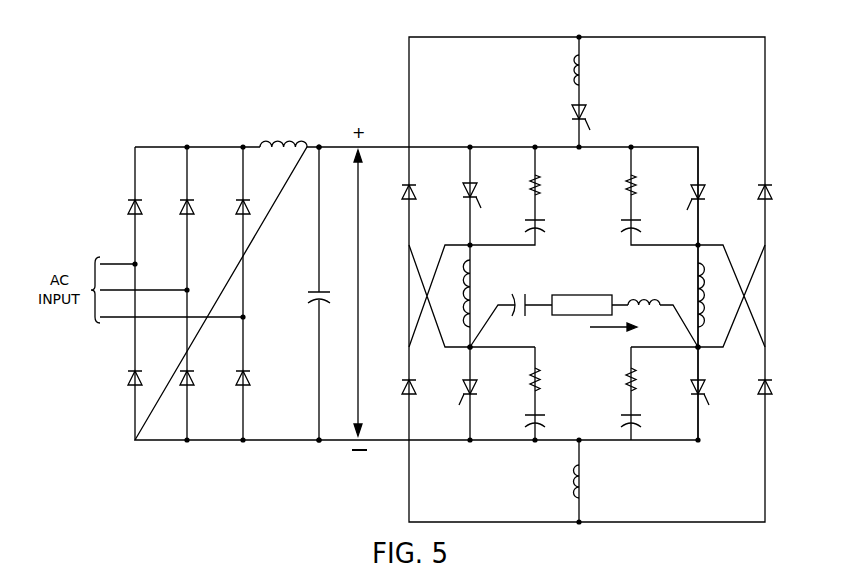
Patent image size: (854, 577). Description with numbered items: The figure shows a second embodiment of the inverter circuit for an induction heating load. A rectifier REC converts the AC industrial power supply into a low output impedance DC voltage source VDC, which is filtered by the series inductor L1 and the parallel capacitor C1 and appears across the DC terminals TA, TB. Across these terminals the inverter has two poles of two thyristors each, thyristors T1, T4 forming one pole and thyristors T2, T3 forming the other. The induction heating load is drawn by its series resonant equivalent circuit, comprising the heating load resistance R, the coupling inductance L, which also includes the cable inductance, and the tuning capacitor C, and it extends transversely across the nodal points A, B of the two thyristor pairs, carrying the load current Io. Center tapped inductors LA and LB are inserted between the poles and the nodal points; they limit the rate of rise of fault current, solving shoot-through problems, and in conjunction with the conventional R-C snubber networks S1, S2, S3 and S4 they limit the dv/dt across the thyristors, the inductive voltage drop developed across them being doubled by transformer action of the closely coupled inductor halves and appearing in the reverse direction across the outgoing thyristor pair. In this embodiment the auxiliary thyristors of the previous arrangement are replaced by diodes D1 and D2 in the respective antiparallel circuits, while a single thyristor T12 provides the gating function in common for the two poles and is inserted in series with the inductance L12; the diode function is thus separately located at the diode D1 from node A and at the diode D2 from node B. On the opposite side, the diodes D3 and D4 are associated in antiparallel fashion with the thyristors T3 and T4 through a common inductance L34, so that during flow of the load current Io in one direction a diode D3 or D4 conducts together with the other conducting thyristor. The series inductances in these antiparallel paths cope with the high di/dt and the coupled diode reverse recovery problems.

The rectifier REC is at (231, 253).
The series inductor L1 is at (283, 158).
The DC terminal TA is at (338, 144).
The DC terminal TB is at (337, 444).
The parallel capacitor C1 is at (306, 296).
The DC voltage source VDC is at (357, 293).
The diode D1 is at (402, 190).
The diode D2 is at (757, 190).
The diode D3 is at (757, 397).
The diode D4 is at (402, 386).
The thyristor T1 is at (460, 190).
The thyristor T2 is at (690, 190).
The thyristor T3 is at (706, 393).
The thyristor T4 is at (460, 387).
The common thyristor T12 is at (590, 110).
The inductance L12 is at (585, 72).
The inductance L34 is at (586, 483).
The center tapped inductor LA is at (475, 292).
The center tapped inductor LB is at (695, 291).
The snubber network S1 is at (567, 212).
The snubber network S2 is at (611, 212).
The snubber network S3 is at (611, 406).
The snubber network S4 is at (567, 406).
The tuning capacitor C is at (518, 292).
The heating load resistance R is at (585, 293).
The coupling inductance L is at (647, 308).
The nodal point A is at (477, 357).
The nodal point B is at (693, 357).
The load current Io is at (613, 337).